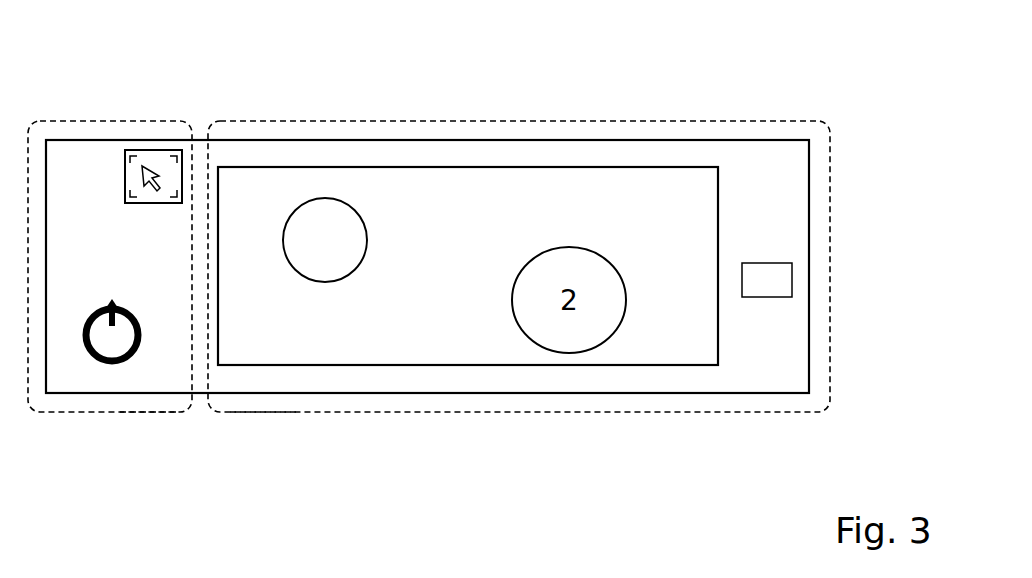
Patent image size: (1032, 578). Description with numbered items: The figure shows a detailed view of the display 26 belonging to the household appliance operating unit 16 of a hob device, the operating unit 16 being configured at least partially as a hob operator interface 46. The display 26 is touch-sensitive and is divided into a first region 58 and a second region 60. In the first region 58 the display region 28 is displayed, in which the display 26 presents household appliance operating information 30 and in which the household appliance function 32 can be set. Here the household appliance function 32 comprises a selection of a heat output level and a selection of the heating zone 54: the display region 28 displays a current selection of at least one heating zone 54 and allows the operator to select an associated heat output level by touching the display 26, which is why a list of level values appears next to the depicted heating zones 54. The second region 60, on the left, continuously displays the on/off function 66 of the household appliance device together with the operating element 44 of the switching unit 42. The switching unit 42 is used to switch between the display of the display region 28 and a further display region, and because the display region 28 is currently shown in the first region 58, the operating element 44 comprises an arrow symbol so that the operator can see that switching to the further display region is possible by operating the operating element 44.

The household appliance operating unit 16 is at (686, 132).
The display 26 is at (479, 140).
The display region 28 is at (517, 395).
The household appliance operating information 30 is at (419, 395).
The household appliance function 32 is at (812, 199).
The switching unit 42 is at (169, 134).
The operating element 44 is at (156, 160).
The hob operator interface 46 is at (757, 140).
The heating zone 54 is at (350, 203).
The first region 58 is at (262, 413).
The second region 60 is at (165, 413).
The on/off function 66 is at (105, 365).